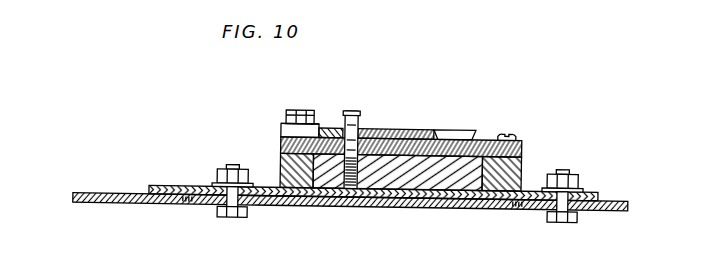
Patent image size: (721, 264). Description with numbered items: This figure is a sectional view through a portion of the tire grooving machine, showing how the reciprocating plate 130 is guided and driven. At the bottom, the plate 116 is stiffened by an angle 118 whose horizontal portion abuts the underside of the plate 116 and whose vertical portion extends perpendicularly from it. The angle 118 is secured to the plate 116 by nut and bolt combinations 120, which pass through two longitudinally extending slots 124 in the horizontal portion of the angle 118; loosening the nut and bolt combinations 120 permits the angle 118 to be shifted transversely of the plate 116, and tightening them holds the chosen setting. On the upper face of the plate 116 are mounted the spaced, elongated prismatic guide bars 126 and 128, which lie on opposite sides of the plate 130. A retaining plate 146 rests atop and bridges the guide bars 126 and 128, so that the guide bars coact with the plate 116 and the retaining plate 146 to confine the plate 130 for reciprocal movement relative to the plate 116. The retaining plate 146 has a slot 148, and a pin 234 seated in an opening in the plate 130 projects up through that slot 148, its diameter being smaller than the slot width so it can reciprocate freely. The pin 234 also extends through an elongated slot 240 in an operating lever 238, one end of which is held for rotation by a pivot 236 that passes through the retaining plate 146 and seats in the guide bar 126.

The plate 116 is at (598, 192).
The angle 118 is at (623, 212).
The nut and bolt combinations 120 is at (240, 221).
The longitudinally extending slots 124 is at (207, 203).
The guide bar 126 is at (278, 170).
The guide bar 128 is at (523, 168).
The plate 130 is at (438, 178).
The retaining plate 146 is at (403, 127).
The slot 148 is at (383, 127).
The pin 234 is at (354, 110).
The pivot 236 is at (293, 106).
The operating lever 238 is at (463, 128).
The elongated slot 240 is at (343, 137).